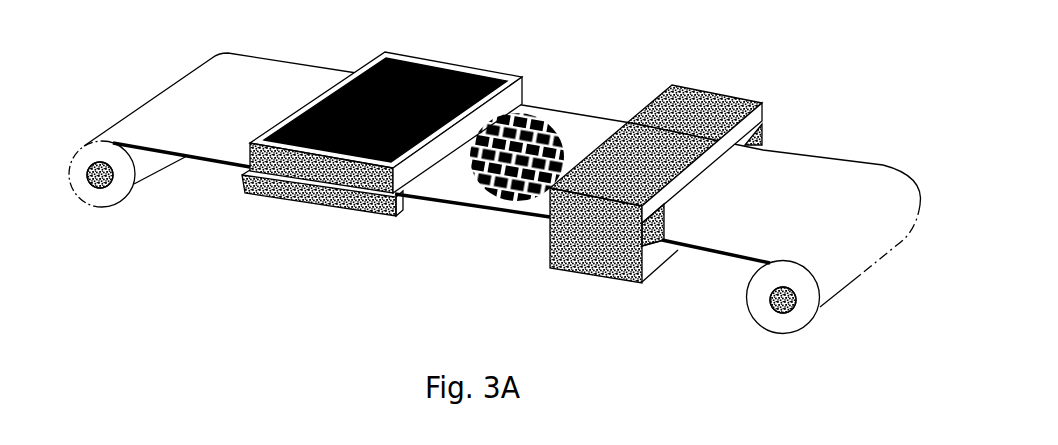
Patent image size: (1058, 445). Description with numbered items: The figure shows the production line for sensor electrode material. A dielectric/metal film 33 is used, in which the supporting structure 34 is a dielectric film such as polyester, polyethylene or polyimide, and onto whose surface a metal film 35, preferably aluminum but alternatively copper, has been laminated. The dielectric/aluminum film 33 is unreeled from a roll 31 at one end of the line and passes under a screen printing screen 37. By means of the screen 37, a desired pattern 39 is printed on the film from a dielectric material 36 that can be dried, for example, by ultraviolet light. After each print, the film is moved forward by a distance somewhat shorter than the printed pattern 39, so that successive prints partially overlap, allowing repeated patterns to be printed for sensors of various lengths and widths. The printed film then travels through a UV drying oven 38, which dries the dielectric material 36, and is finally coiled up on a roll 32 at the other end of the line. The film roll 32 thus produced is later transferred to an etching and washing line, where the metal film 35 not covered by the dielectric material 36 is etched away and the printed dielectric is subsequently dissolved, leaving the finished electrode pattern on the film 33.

The roll 31 is at (100, 196).
The roll 32 is at (782, 318).
The dielectric/metal film 33 is at (183, 103).
The supporting structure 34 is at (206, 166).
The metal film 35 is at (147, 145).
The dielectric material 36 is at (410, 62).
The screen printing screen 37 is at (353, 173).
The UV drying oven 38 is at (725, 95).
The pattern 39 is at (538, 127).